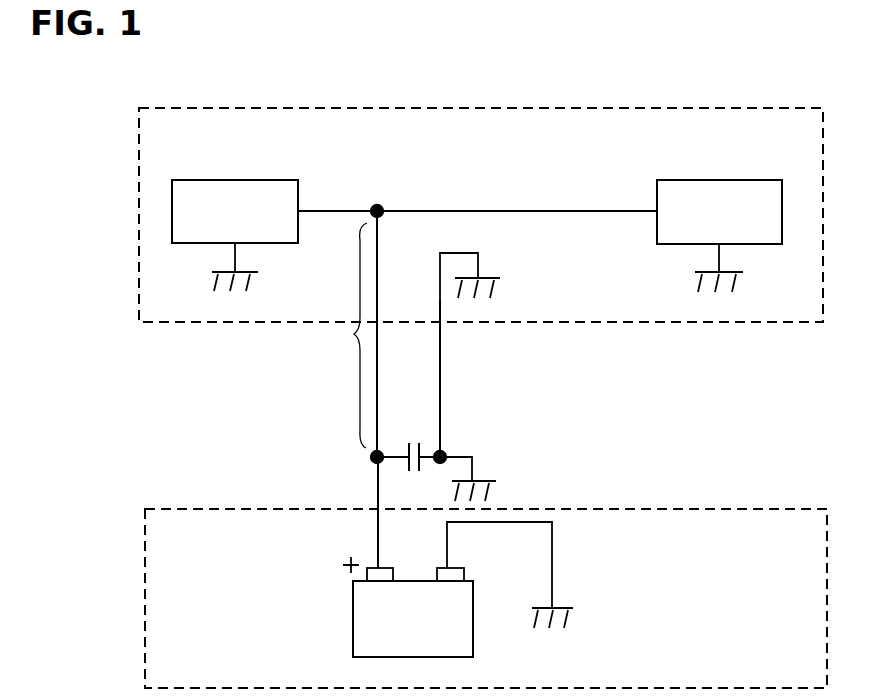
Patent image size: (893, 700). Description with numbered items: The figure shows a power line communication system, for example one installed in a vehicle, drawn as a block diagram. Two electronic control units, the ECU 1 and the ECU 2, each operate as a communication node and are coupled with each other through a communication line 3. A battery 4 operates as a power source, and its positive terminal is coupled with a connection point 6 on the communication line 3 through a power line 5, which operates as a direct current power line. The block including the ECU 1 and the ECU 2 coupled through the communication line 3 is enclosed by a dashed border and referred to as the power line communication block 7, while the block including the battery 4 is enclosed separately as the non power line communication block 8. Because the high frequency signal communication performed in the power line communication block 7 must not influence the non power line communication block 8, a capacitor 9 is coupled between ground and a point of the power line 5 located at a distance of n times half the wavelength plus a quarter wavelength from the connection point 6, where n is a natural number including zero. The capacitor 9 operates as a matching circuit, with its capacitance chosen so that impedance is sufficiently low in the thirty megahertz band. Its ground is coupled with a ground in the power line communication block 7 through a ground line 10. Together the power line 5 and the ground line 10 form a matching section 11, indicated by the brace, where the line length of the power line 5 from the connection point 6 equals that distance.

The electronic control unit 1 is at (229, 179).
The electronic control unit 2 is at (718, 179).
The communication line 3 is at (537, 213).
The battery 4 is at (353, 607).
The power line 5 is at (376, 496).
The connection point 6 is at (376, 204).
The power line communication block 7 is at (668, 106).
The non power line communication block 8 is at (583, 508).
The capacitor 9 is at (414, 473).
The ground line 10 is at (440, 370).
The matching section 11 is at (340, 402).